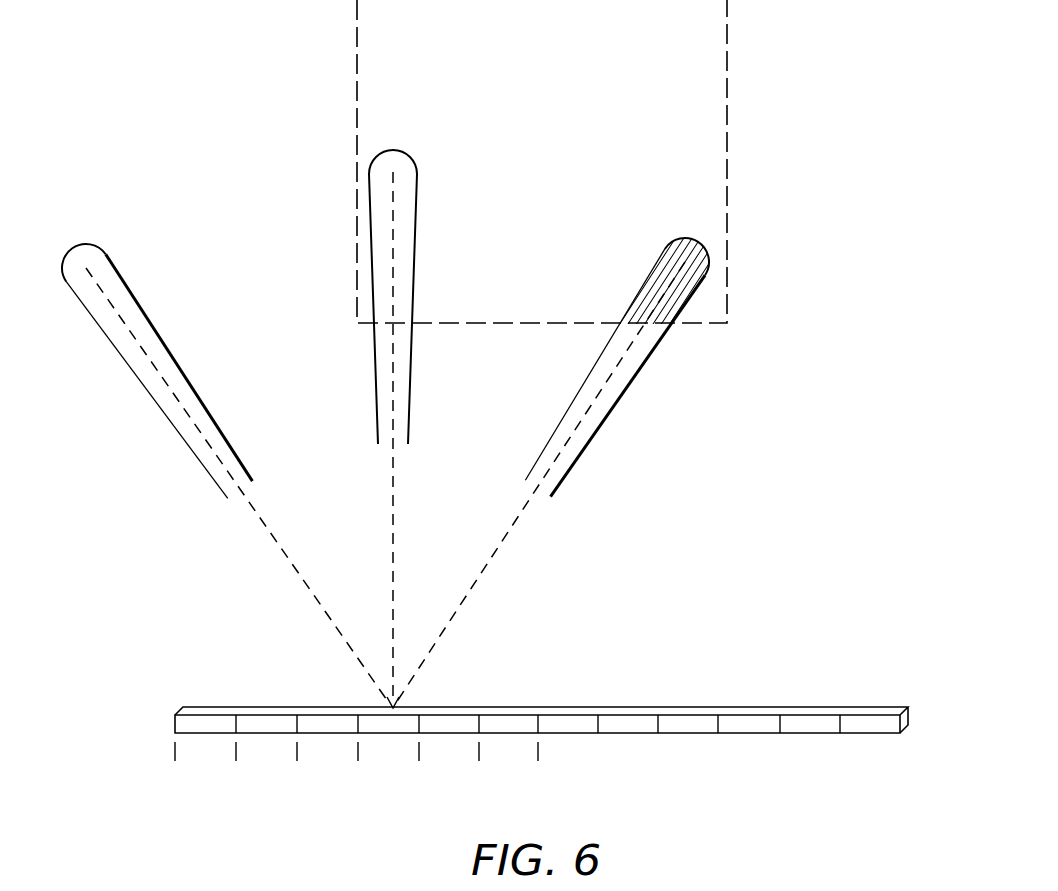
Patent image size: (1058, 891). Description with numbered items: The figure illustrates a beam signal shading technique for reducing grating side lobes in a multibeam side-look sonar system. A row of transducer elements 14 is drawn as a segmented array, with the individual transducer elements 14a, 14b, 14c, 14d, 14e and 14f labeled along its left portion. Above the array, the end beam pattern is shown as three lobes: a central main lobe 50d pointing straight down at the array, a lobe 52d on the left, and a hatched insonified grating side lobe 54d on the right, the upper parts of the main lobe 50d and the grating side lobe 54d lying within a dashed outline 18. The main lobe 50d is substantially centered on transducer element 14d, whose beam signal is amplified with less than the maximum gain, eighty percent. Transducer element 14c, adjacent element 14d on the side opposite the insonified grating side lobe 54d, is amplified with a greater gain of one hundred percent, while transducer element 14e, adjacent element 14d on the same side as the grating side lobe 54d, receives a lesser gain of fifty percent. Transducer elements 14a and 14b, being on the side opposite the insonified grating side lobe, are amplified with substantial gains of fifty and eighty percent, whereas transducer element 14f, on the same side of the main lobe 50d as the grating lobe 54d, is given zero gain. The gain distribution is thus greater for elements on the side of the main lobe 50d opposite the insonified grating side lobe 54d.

The reflector housing 18 is at (706, 88).
The main lobe 50d is at (397, 149).
The left angled lamp 52d is at (79, 243).
The insonified grating side lobe 54d is at (692, 236).
The photoreceptor / sensor array 14 is at (175, 725).
The transducer element 14a is at (203, 767).
The transducer element 14b is at (265, 767).
The transducer element 14c is at (328, 767).
The transducer element 14d is at (387, 767).
The transducer element 14e is at (446, 767).
The transducer element 14f is at (507, 767).